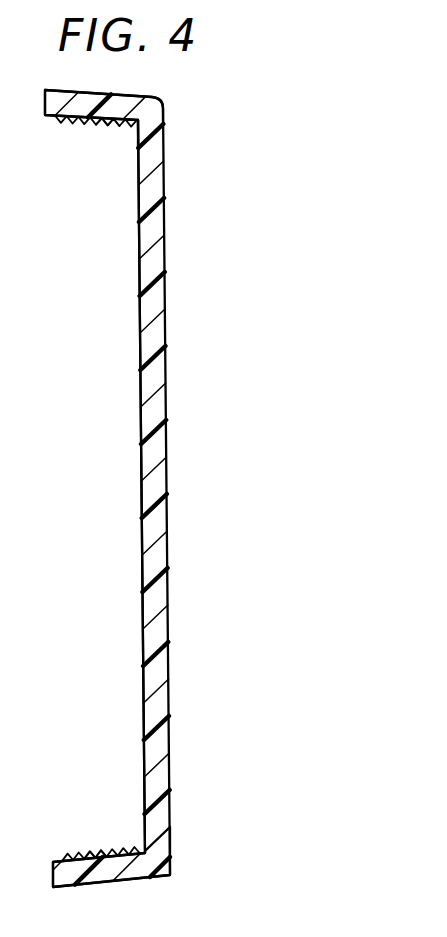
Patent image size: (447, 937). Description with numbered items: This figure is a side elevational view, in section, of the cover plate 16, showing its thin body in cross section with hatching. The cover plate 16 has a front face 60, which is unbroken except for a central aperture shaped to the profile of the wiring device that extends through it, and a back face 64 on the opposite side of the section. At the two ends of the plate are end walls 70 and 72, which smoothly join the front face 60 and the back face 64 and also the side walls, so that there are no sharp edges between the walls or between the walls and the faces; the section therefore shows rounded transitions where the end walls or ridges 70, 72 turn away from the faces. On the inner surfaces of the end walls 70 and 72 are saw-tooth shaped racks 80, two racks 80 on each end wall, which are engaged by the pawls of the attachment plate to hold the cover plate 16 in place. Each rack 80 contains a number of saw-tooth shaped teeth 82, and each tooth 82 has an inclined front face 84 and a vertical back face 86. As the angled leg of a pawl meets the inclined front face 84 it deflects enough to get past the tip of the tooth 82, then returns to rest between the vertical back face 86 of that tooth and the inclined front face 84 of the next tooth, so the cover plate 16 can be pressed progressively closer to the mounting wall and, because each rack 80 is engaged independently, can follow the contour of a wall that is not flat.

The cover plate 16 is at (168, 488).
The front face 60 is at (168, 405).
The back face 64 is at (143, 578).
The end wall 70 is at (114, 97).
The end wall 72 is at (125, 880).
The saw-tooth shaped rack 80 is at (63, 121).
The saw-tooth shaped tooth 82 is at (115, 128).
The inclined front face 84 is at (67, 855).
The vertical back face 86 is at (95, 852).